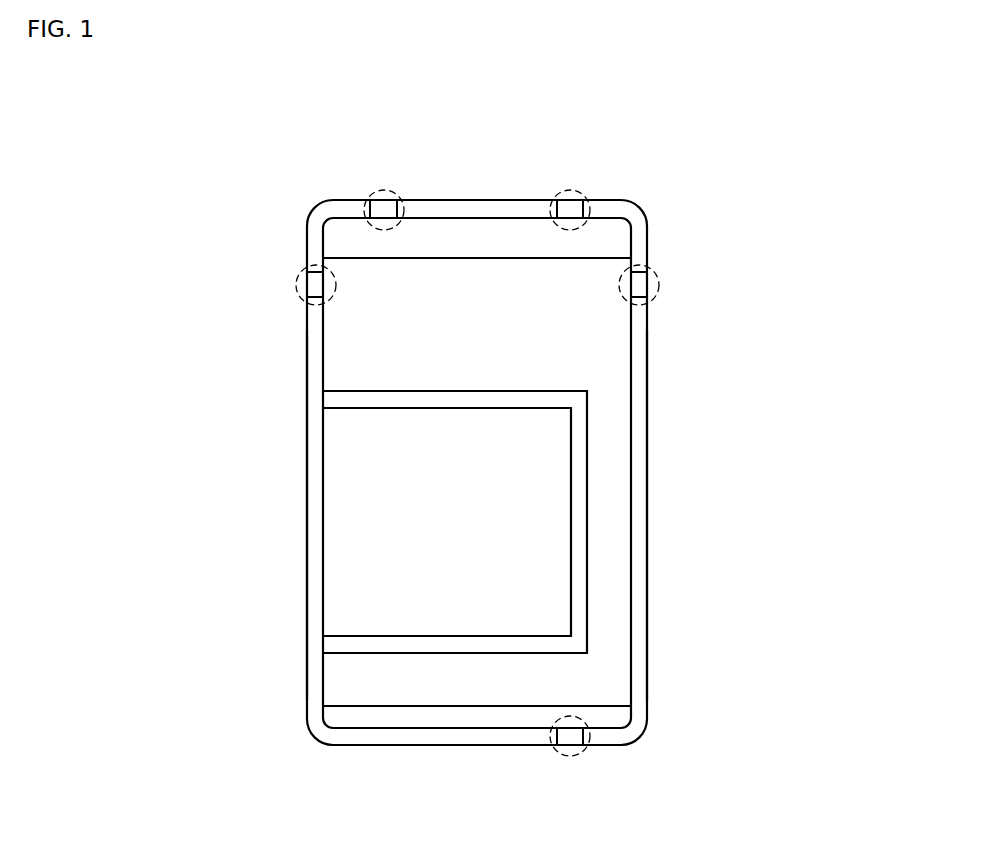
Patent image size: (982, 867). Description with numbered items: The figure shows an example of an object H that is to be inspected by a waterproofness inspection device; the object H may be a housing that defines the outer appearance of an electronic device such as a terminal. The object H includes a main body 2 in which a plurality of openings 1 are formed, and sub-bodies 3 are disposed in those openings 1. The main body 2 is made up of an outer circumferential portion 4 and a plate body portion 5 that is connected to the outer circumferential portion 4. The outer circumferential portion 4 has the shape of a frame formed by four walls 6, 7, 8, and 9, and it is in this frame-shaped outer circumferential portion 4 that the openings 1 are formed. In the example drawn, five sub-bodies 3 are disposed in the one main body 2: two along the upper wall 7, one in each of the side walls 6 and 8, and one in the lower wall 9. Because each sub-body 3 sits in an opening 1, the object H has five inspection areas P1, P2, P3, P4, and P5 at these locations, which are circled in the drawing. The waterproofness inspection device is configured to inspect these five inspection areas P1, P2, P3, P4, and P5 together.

The opening 1 is at (368, 204).
The main body 2 is at (523, 474).
The sub-body 3 is at (384, 204).
The outer circumferential portion 4 is at (657, 733).
The plate body portion 5 is at (615, 474).
The wall 6 is at (309, 524).
The wall 7 is at (478, 200).
The wall 8 is at (645, 524).
The wall 9 is at (468, 745).
The object H is at (632, 176).
The inspection area P1 is at (306, 294).
The inspection area P2 is at (393, 201).
The inspection area P3 is at (580, 201).
The inspection area P4 is at (649, 294).
The inspection area P5 is at (580, 747).